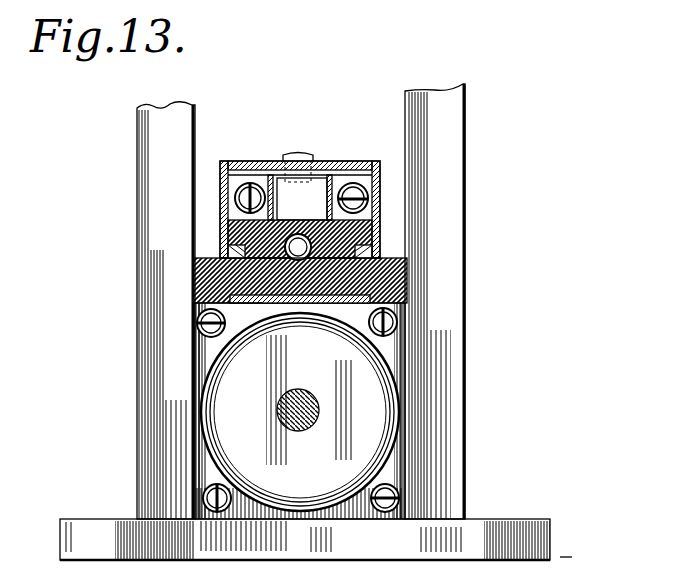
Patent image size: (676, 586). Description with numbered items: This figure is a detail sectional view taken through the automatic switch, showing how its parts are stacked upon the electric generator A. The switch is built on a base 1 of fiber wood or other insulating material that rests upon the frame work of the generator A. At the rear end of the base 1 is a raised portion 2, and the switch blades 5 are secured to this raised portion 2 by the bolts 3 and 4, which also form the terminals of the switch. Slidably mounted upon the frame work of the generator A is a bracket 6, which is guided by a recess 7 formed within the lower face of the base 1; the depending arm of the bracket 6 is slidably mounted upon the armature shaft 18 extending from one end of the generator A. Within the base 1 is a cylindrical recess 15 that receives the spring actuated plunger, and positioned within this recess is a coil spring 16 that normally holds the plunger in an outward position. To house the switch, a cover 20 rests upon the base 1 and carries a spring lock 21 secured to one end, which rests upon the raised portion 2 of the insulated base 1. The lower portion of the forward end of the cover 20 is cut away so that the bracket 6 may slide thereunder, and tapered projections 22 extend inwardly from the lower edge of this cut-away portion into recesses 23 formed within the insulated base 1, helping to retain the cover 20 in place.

The base 1 is at (407, 287).
The raised portion 2 is at (382, 231).
The bolt 3 is at (362, 200).
The bolt 4 is at (232, 198).
The switch blades 5 is at (278, 201).
The bracket 6 is at (296, 262).
The recess 7 is at (405, 303).
The cylindrical recess 15 is at (260, 304).
The coil spring 16 is at (330, 300).
The armature shaft 18 is at (295, 432).
The cover 20 is at (356, 152).
The spring lock 21 is at (287, 172).
The tapered projections 22 is at (227, 244).
The recesses 23 is at (199, 274).
The electric generator A is at (260, 556).